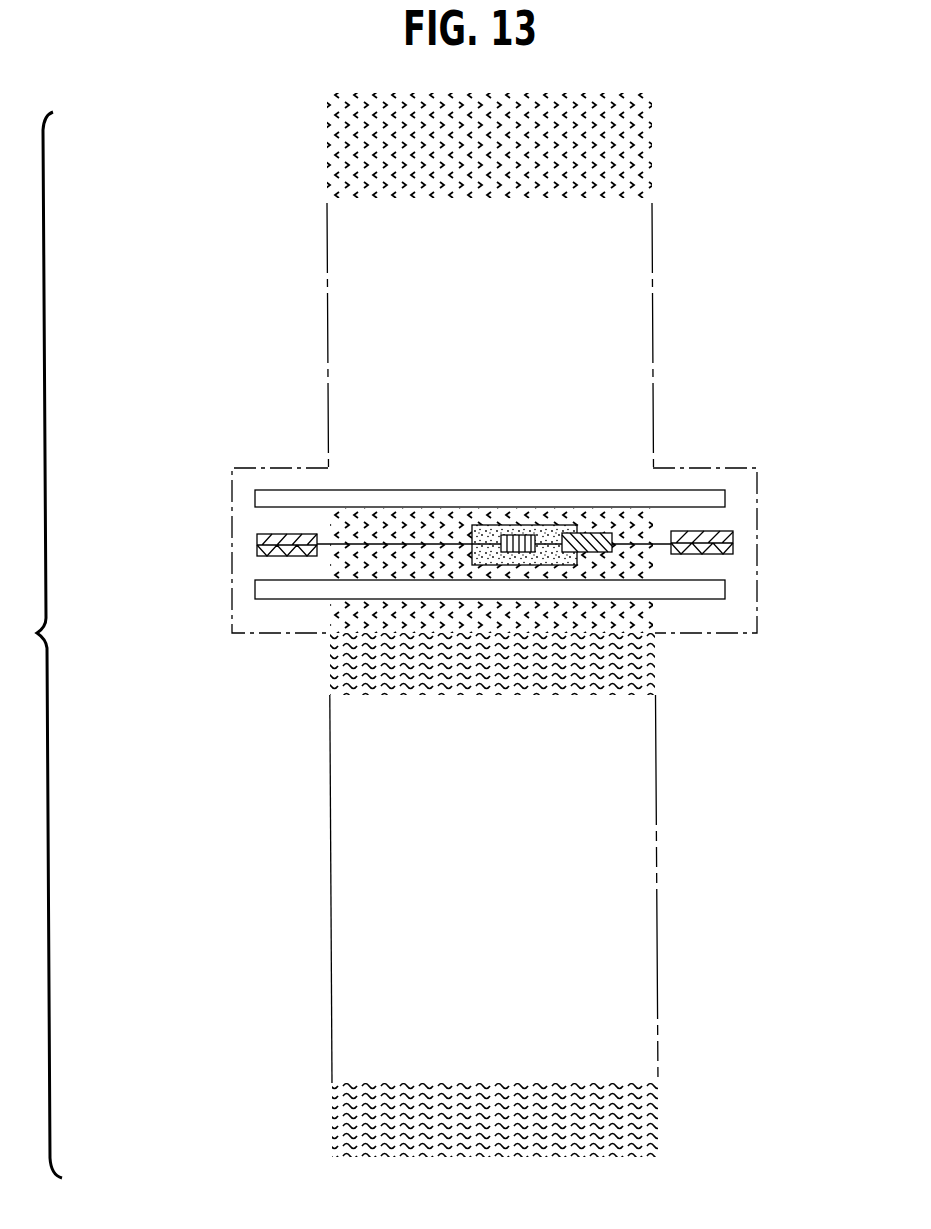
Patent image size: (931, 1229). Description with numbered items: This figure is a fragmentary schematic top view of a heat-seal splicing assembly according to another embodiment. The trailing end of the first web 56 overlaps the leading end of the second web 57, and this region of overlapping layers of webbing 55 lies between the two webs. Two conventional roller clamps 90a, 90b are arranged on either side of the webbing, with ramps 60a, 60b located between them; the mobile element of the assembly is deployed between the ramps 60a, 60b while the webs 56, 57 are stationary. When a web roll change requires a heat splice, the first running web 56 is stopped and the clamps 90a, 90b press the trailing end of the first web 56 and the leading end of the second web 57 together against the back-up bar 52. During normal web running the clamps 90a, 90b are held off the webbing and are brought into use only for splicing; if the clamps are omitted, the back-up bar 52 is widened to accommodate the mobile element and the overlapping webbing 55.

The back-up bar 52 is at (293, 624).
The overlapping layers of webbing 55 is at (430, 617).
The first web 56 is at (615, 163).
The second web 57 is at (593, 1085).
The ramp 60a is at (258, 546).
The ramp 60b is at (733, 531).
The roller clamp 90a is at (264, 497).
The roller clamp 90b is at (695, 597).